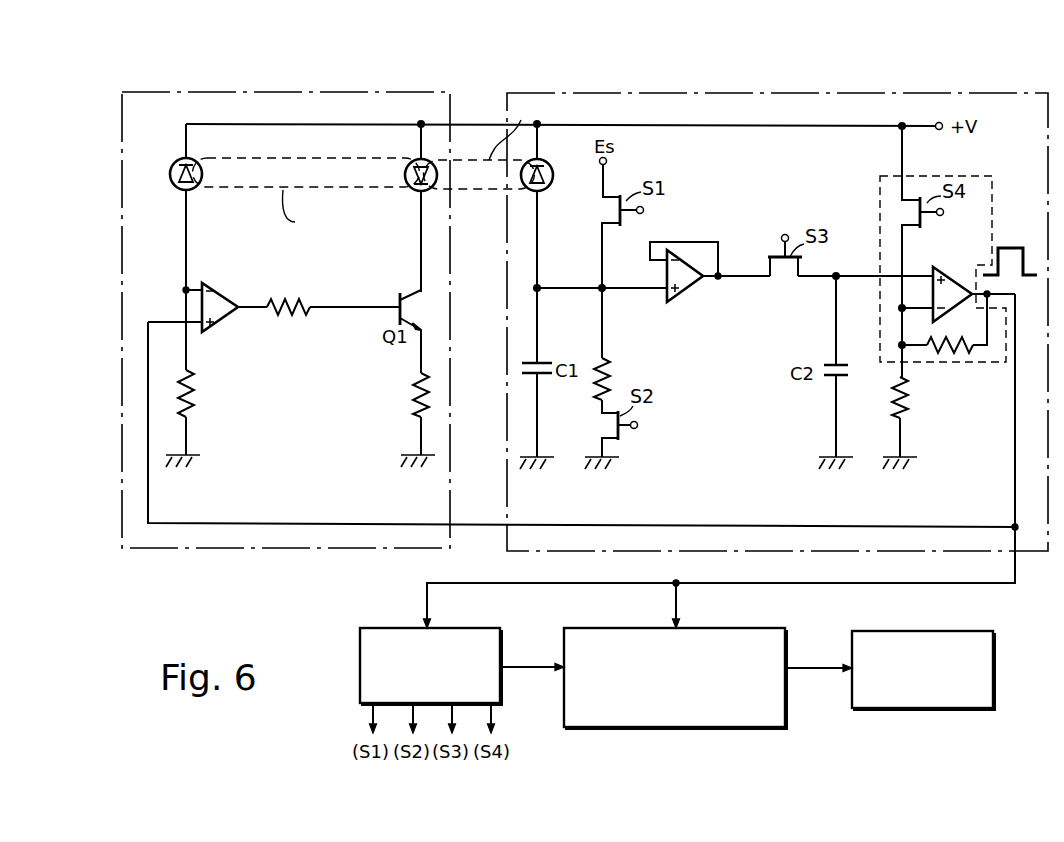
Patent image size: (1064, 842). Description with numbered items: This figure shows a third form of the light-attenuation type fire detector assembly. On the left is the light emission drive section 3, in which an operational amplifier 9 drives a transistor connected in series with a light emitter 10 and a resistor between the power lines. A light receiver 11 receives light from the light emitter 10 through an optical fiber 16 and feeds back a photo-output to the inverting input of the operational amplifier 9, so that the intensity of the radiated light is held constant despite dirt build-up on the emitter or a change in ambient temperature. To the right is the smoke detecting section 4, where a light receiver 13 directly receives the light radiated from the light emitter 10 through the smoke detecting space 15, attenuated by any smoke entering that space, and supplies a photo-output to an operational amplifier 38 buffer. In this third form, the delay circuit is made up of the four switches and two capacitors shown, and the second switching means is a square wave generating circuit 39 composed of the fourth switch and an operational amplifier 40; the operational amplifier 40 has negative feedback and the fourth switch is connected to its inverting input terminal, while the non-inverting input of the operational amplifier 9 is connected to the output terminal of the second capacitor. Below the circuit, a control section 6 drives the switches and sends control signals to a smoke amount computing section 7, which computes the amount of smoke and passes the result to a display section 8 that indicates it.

The light emission drive section 3 is at (138, 92).
The smoke detecting section 4 is at (633, 93).
The control section 6 is at (501, 647).
The smoke amount computing section 7 is at (786, 647).
The display section 8 is at (994, 647).
The operational amplifier 9 is at (228, 297).
The light emitter 10 is at (409, 162).
The light receiver 11 is at (172, 182).
The light receiver 13 is at (551, 190).
The smoke detecting space 15 is at (485, 190).
The optical fiber 16 is at (268, 185).
The operational amplifier (buffer) 38 is at (689, 290).
The square wave generating circuit 39 is at (878, 192).
The operational amplifier 40 is at (954, 268).